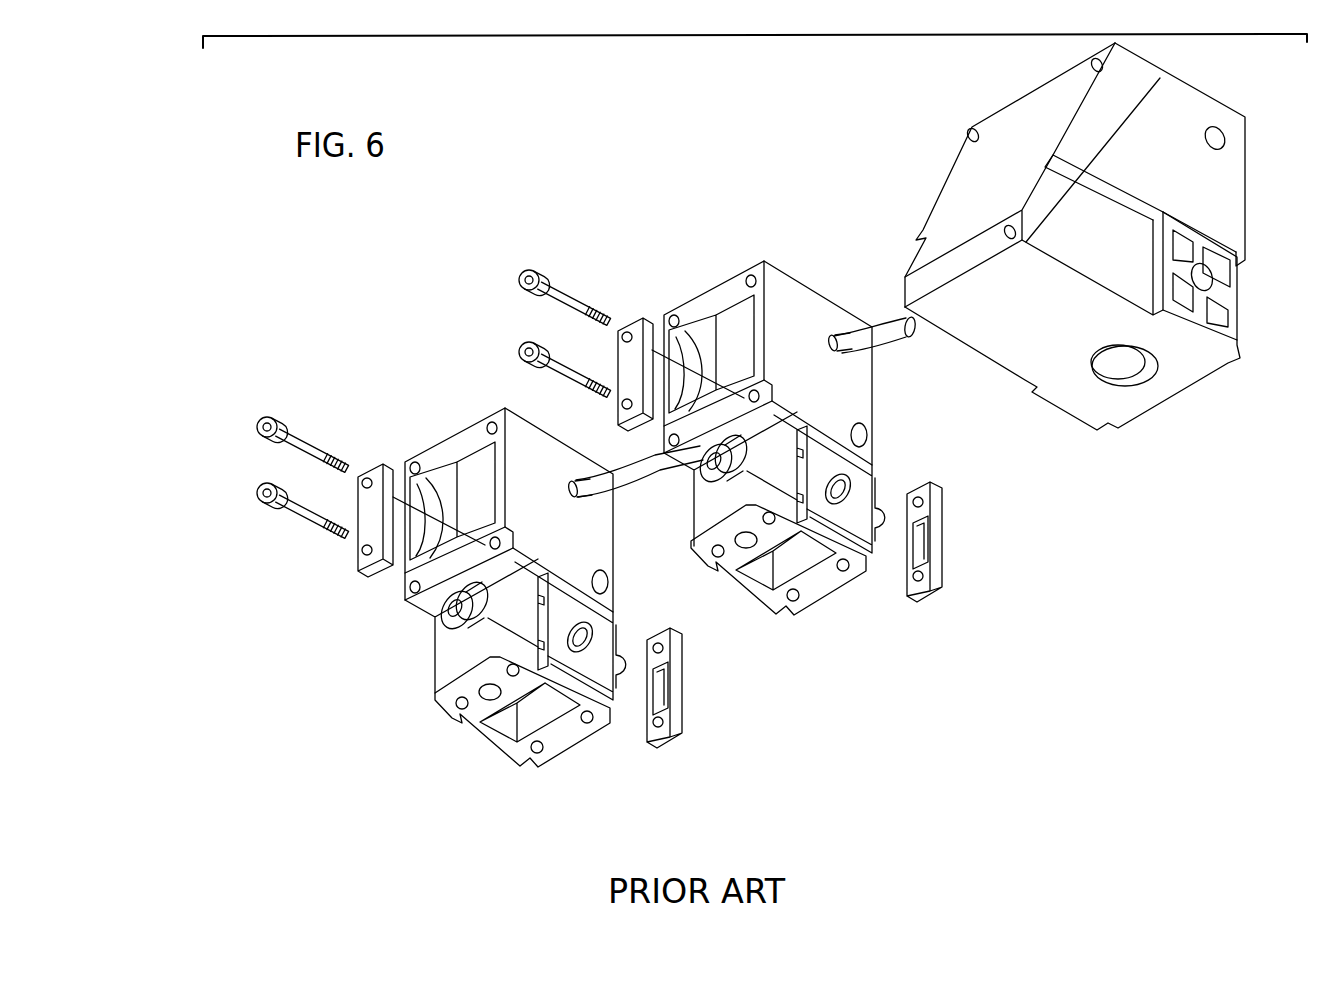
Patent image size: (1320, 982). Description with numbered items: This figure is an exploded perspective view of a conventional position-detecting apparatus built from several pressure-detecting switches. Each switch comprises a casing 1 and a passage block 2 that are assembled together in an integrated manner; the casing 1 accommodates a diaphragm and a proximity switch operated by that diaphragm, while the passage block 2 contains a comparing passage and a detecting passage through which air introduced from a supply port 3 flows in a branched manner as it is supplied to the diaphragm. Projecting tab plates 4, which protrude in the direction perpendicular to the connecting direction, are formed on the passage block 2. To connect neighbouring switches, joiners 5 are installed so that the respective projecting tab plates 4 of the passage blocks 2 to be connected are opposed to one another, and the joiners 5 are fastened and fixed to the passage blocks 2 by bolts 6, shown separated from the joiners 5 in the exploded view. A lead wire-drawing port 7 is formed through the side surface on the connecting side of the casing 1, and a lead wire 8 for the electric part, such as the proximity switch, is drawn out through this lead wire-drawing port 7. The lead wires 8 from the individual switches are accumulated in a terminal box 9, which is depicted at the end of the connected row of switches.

The casing 1 is at (623, 454).
The passage block 2 is at (650, 661).
The supply port 3 is at (740, 541).
The projecting tab plate 4 is at (694, 598).
The joiner 5 is at (665, 508).
The bolt 6 is at (425, 404).
The lead wire-drawing port 7 is at (709, 447).
The lead wire 8 is at (930, 377).
The terminal box 9 is at (1237, 220).